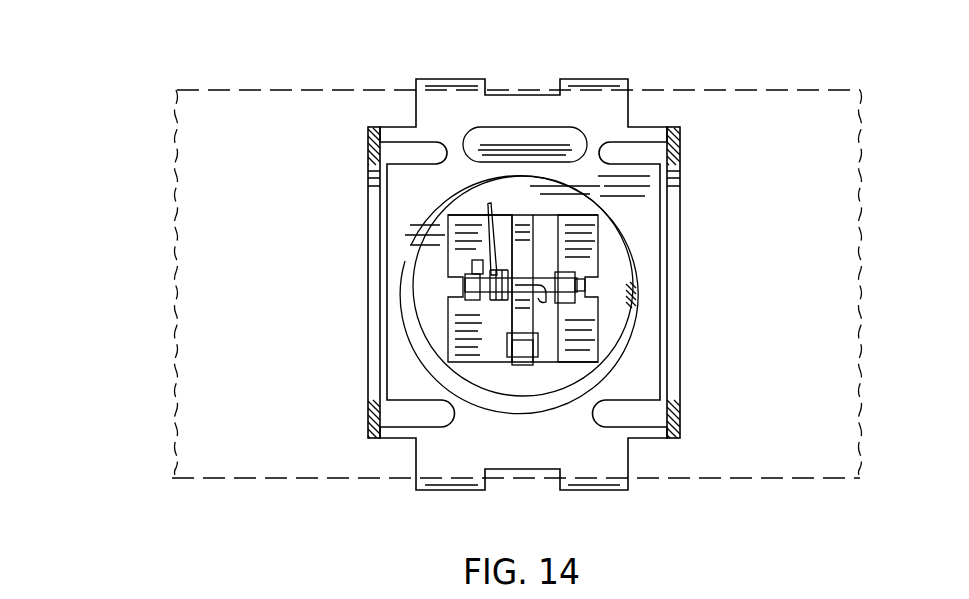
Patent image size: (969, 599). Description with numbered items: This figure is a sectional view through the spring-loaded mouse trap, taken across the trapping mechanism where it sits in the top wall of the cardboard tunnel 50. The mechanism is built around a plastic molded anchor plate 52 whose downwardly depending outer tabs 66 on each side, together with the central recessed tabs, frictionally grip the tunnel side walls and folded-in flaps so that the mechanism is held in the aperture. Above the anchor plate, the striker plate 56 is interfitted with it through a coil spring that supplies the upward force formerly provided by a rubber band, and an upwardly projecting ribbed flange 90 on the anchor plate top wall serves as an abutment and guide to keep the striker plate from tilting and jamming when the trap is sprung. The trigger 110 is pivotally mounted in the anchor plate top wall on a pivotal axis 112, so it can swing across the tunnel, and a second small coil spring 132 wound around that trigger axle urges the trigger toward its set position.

The cardboard tunnel 50 is at (242, 235).
The anchor plate 52 is at (600, 107).
The striker plate 56 is at (366, 170).
The outer tabs 66 is at (442, 79).
The ribbed flange 90 is at (520, 128).
The trigger 110 is at (530, 313).
The pivotal axis 112 is at (540, 278).
The second small coil spring 132 is at (496, 302).